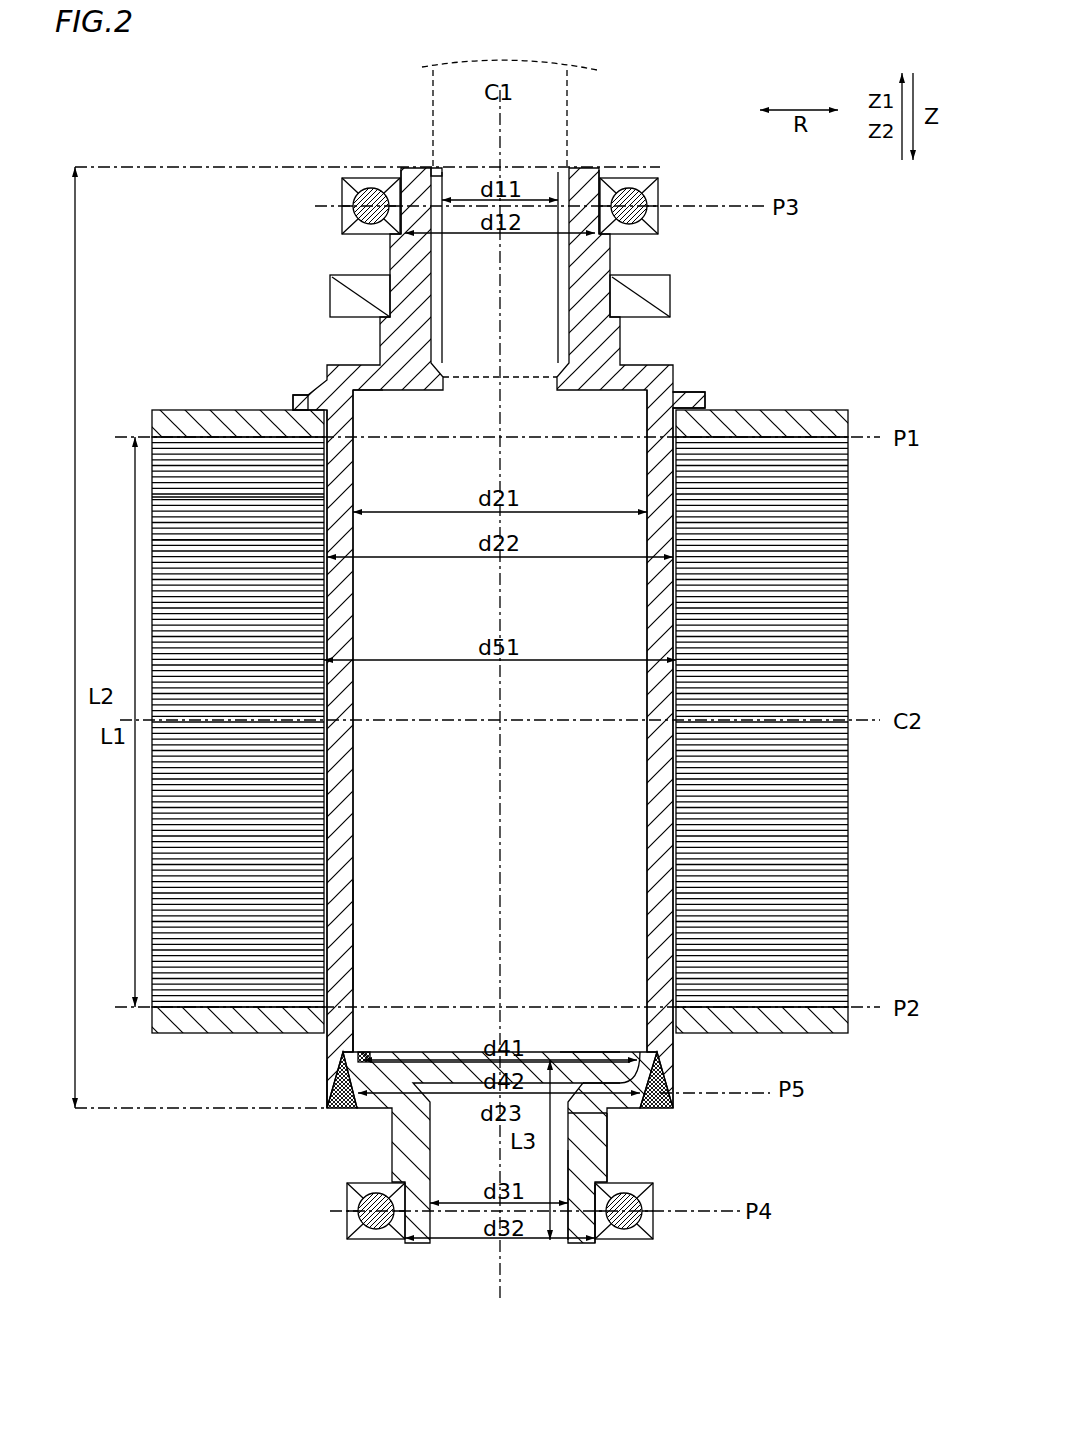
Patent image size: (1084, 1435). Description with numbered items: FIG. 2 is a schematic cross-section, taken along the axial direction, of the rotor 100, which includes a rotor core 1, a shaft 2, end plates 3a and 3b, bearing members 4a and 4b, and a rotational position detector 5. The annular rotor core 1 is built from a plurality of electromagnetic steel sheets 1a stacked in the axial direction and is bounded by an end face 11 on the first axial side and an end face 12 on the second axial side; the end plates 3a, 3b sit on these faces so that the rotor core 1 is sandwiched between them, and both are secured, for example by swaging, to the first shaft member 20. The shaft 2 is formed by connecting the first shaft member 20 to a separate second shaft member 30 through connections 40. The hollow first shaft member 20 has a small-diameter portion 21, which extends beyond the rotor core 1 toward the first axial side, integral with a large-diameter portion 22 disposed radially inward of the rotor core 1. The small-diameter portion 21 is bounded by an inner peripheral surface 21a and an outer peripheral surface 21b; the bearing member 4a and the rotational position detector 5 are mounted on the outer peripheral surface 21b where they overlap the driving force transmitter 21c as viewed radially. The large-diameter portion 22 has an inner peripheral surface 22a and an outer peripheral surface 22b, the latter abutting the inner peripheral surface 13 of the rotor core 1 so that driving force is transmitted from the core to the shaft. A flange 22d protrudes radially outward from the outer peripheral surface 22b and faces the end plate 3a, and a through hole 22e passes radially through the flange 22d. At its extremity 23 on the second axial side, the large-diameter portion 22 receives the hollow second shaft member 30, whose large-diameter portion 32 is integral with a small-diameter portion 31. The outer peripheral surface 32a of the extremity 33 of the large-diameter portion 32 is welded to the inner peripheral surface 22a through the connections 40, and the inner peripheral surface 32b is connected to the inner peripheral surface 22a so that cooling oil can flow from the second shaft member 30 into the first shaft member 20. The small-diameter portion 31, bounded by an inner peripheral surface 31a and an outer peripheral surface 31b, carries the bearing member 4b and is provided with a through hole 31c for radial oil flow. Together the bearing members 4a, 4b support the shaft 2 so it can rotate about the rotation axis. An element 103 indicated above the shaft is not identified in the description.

The rotor 100 is at (180, 84).
The rotor core 1 is at (846, 622).
The electromagnetic steel sheets 1a is at (848, 497).
The shaft 2 is at (483, 709).
The end plate 3a is at (165, 417).
The end plate 3b is at (232, 1033).
The bearing member 4a is at (355, 188).
The bearing member 4b is at (360, 1195).
The rotational position detector 5 is at (342, 297).
The end face 11 is at (355, 433).
The end face 12 is at (353, 1050).
The inner peripheral surface 13 is at (347, 900).
The first shaft member 20 is at (492, 596).
The small-diameter portion 21 is at (385, 253).
The inner peripheral surface 21a is at (437, 185).
The outer peripheral surface 21b is at (398, 182).
The driving force transmitter 21c is at (444, 257).
The large-diameter portion 22 is at (347, 490).
The inner peripheral surface 22a is at (347, 960).
The outer peripheral surface 22b is at (300, 810).
The flange 22d is at (300, 398).
The through hole 22e is at (688, 400).
The extremity 23 is at (323, 1095).
The second shaft member 30 is at (547, 1144).
The small-diameter portion 31 is at (428, 1248).
The inner peripheral surface 31a is at (567, 1222).
The outer peripheral surface 31b is at (607, 1243).
The through hole 31c is at (607, 1123).
The large-diameter portion 32 is at (400, 1052).
The outer peripheral surface 32a is at (633, 1063).
The inner peripheral surface 32b is at (600, 1052).
The extremity 33 is at (367, 1057).
The connection 40 is at (340, 1100).
The load shaft 103 is at (570, 145).